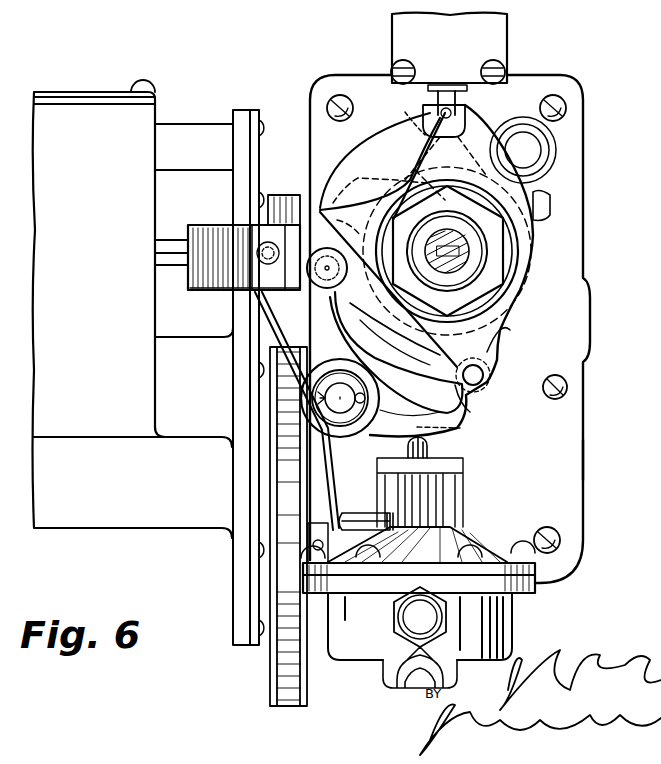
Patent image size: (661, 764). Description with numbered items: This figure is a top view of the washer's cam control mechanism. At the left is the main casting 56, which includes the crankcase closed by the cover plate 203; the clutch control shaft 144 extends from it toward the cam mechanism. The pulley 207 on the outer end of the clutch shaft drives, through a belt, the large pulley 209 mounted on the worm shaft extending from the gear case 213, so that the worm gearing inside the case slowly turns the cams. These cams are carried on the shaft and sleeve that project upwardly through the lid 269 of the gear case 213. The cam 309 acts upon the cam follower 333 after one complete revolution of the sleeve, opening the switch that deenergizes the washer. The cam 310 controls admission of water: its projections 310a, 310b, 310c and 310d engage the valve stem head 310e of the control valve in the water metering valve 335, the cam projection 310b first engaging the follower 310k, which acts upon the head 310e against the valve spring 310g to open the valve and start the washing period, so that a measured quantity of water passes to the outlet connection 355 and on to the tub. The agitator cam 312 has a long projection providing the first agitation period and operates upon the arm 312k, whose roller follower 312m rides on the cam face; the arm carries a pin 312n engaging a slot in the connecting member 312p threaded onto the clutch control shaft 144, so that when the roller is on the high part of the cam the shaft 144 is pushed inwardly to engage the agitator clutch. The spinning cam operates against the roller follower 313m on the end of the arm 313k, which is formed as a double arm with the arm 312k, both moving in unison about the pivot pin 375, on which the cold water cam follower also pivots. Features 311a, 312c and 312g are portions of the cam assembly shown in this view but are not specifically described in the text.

The main casting 56 is at (108, 240).
The clutch control shaft 144 is at (170, 248).
The cover plate 203 is at (258, 580).
The pulley 207 is at (286, 207).
The large pulley 209 is at (279, 672).
The gear case 213 is at (568, 460).
The lid 269 is at (568, 424).
The cam 309 is at (400, 180).
The cam 310 is at (500, 340).
The projection 310a is at (505, 366).
The cam projection 310b is at (452, 370).
The projection 310c is at (409, 186).
The projection 310d is at (396, 115).
The valve stem head 310e is at (428, 448).
The valve spring 310g is at (353, 516).
The follower 310k is at (410, 418).
The cam 311a is at (366, 143).
The agitator cam 312 is at (524, 276).
The clip 312c is at (550, 205).
The ring 312g is at (526, 318).
The arm 312k is at (322, 337).
The roller follower 312m is at (318, 287).
The pin 312n is at (260, 250).
The connecting member 312p is at (218, 290).
The arm 313k is at (472, 413).
The roller follower 313m is at (488, 384).
The cam follower 333 is at (472, 88).
The water metering valve 335 is at (504, 617).
The outlet connection 355 is at (398, 620).
The pivot pin 375 is at (340, 412).